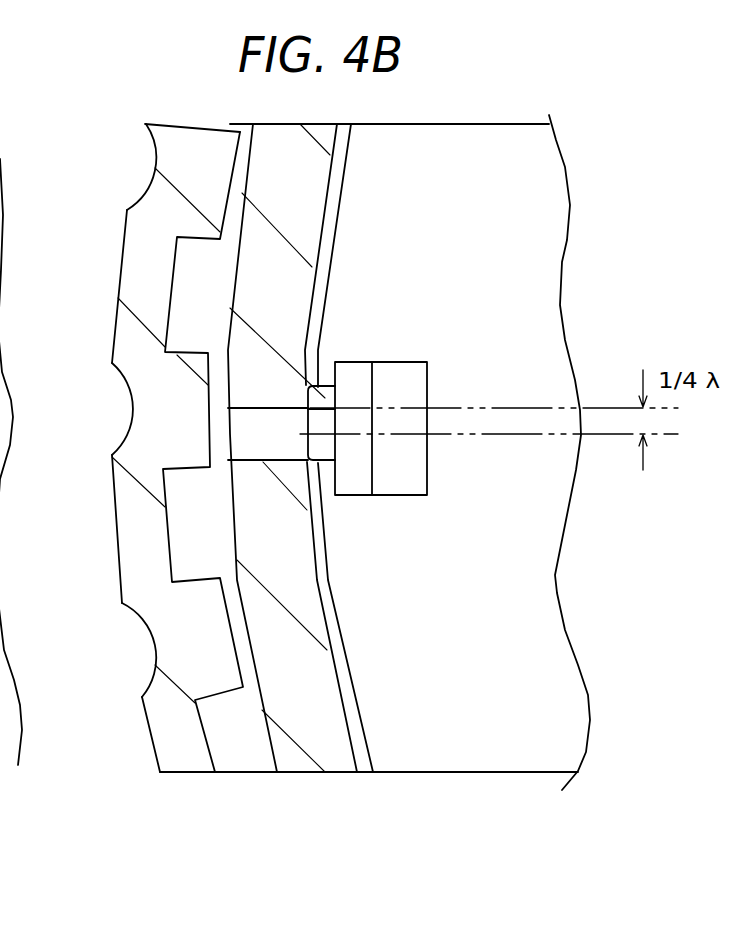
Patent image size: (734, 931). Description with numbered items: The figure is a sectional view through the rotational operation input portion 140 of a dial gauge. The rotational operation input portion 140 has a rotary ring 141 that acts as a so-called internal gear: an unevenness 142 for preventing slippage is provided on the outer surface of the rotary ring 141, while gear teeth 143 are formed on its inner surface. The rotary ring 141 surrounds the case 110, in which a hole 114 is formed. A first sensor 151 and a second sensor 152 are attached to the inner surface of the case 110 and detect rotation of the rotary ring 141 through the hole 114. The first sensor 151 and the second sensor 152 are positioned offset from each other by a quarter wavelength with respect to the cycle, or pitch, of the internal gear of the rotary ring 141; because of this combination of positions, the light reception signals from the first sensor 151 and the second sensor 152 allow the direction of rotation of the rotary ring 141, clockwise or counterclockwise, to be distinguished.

The case 110 is at (270, 672).
The hole 114 is at (272, 457).
The rotational operation input portion 140 is at (116, 206).
The rotary ring 141 is at (153, 285).
The unevenness 142 is at (133, 352).
The gear teeth 143 is at (197, 460).
The first sensor 151 is at (310, 387).
The second sensor 152 is at (325, 437).